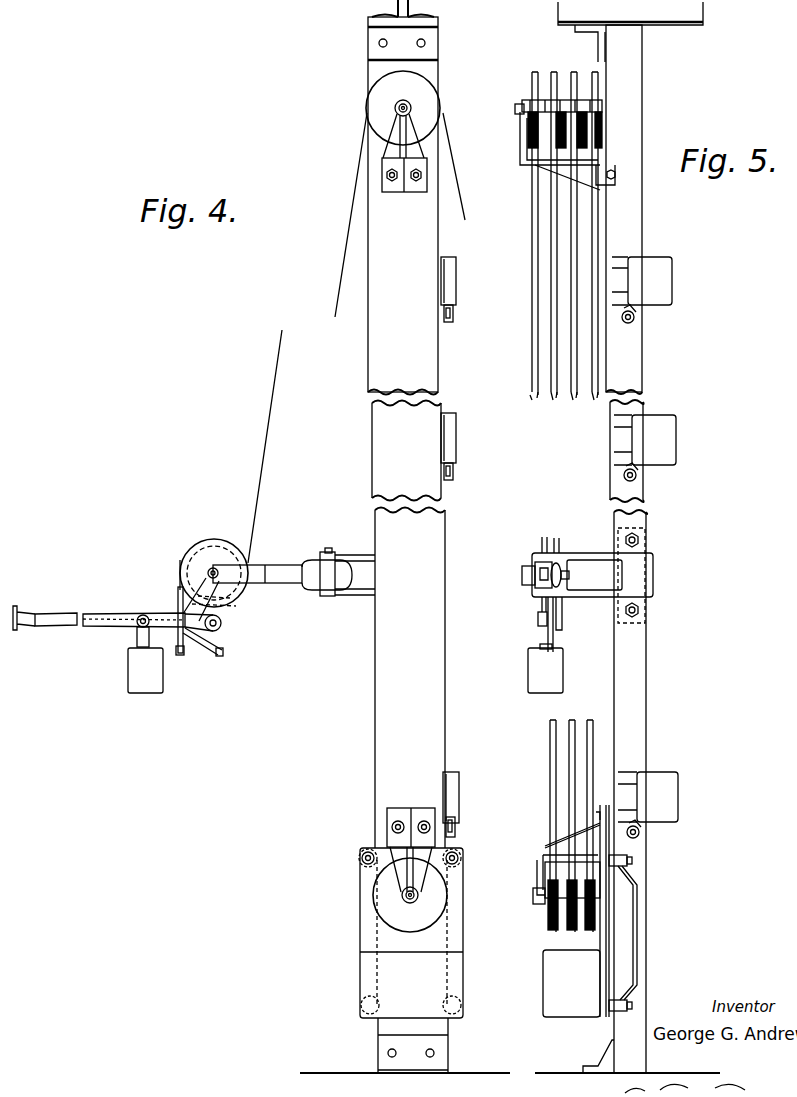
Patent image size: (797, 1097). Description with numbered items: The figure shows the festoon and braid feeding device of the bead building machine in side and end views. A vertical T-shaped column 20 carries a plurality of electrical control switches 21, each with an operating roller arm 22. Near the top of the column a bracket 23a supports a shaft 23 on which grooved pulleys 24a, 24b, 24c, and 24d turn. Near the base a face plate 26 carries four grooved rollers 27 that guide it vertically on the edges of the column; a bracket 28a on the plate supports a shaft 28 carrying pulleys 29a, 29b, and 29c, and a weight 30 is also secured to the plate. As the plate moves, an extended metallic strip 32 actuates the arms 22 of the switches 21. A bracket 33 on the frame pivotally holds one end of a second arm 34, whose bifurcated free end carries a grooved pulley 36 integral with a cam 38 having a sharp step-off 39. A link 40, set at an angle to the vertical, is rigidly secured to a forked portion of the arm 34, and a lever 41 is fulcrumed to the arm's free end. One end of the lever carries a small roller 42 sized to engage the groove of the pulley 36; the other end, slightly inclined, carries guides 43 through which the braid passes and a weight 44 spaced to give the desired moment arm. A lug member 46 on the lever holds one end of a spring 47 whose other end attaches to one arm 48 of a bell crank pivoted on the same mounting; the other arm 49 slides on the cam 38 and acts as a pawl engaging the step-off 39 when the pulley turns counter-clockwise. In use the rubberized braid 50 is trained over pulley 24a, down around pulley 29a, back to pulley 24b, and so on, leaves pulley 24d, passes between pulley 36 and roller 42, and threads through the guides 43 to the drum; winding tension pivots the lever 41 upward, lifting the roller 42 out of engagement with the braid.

In FIG. 4, the vertical T-shaped column 20 is at (443, 240).
In FIG. 5, the vertical T-shaped column 20 is at (635, 210).
In FIG. 4, the electrical control switches 21 is at (449, 277).
In FIG. 5, the electrical control switches 21 is at (660, 277).
In FIG. 4, the operating roller arm 22 is at (453, 316).
In FIG. 5, the operating roller arm 22 is at (634, 319).
In FIG. 4, the shaft 23 is at (411, 108).
In FIG. 5, the shaft 23 is at (509, 107).
In FIG. 4, the bracket 23a is at (395, 140).
In FIG. 5, the bracket 23a is at (530, 152).
In FIG. 5, the pulley 24a is at (540, 82).
In FIG. 5, the pulley 24b is at (556, 74).
In FIG. 5, the pulley 24c is at (577, 74).
In FIG. 5, the pulley 24d is at (595, 80).
In FIG. 4, the face plate 26 is at (455, 917).
In FIG. 5, the face plate 26 is at (607, 943).
In FIG. 5, the grooved rollers 27 is at (632, 861).
In FIG. 4, the shaft 28 is at (403, 895).
In FIG. 5, the shaft 28 is at (533, 896).
In FIG. 4, the bracket 28a is at (392, 864).
In FIG. 5, the bracket 28a is at (543, 855).
In FIG. 4, the pulley 29a is at (436, 891).
In FIG. 5, the pulley 29a is at (548, 925).
In FIG. 5, the pulley 29b is at (568, 932).
In FIG. 5, the pulley 29c is at (587, 935).
In FIG. 4, the weight 30 is at (368, 972).
In FIG. 5, the weight 30 is at (548, 990).
In FIG. 5, the extended metallic strip 32 is at (637, 915).
In FIG. 4, the bracket 33 is at (352, 590).
In FIG. 5, the bracket 33 is at (653, 560).
In FIG. 4, the second arm 34 is at (287, 566).
In FIG. 4, the pulley 36 is at (221, 542).
In FIG. 5, the pulley 36 is at (541, 545).
In FIG. 4, the cam 38 is at (201, 545).
In FIG. 5, the cam 38 is at (570, 540).
In FIG. 4, the sharp step-off 39 is at (178, 578).
In FIG. 4, the link 40 is at (238, 601).
In FIG. 4, the lever 41 is at (162, 628).
In FIG. 4, the small roller 42 is at (221, 626).
In FIG. 5, the small roller 42 is at (538, 622).
In FIG. 4, the guides 43 is at (55, 613).
In FIG. 4, the weight 44 is at (143, 693).
In FIG. 5, the weight 44 is at (528, 670).
In FIG. 4, the lug member 46 is at (182, 655).
In FIG. 4, the spring 47 is at (205, 656).
In FIG. 4, the arm of bell crank 48 is at (222, 656).
In FIG. 5, the arm of bell crank 48 is at (555, 635).
In FIG. 4, the arm of bell crank 49 is at (177, 598).
In FIG. 4, the rubberized braid 50 is at (463, 190).
In FIG. 5, the rubberized braid 50 is at (535, 400).